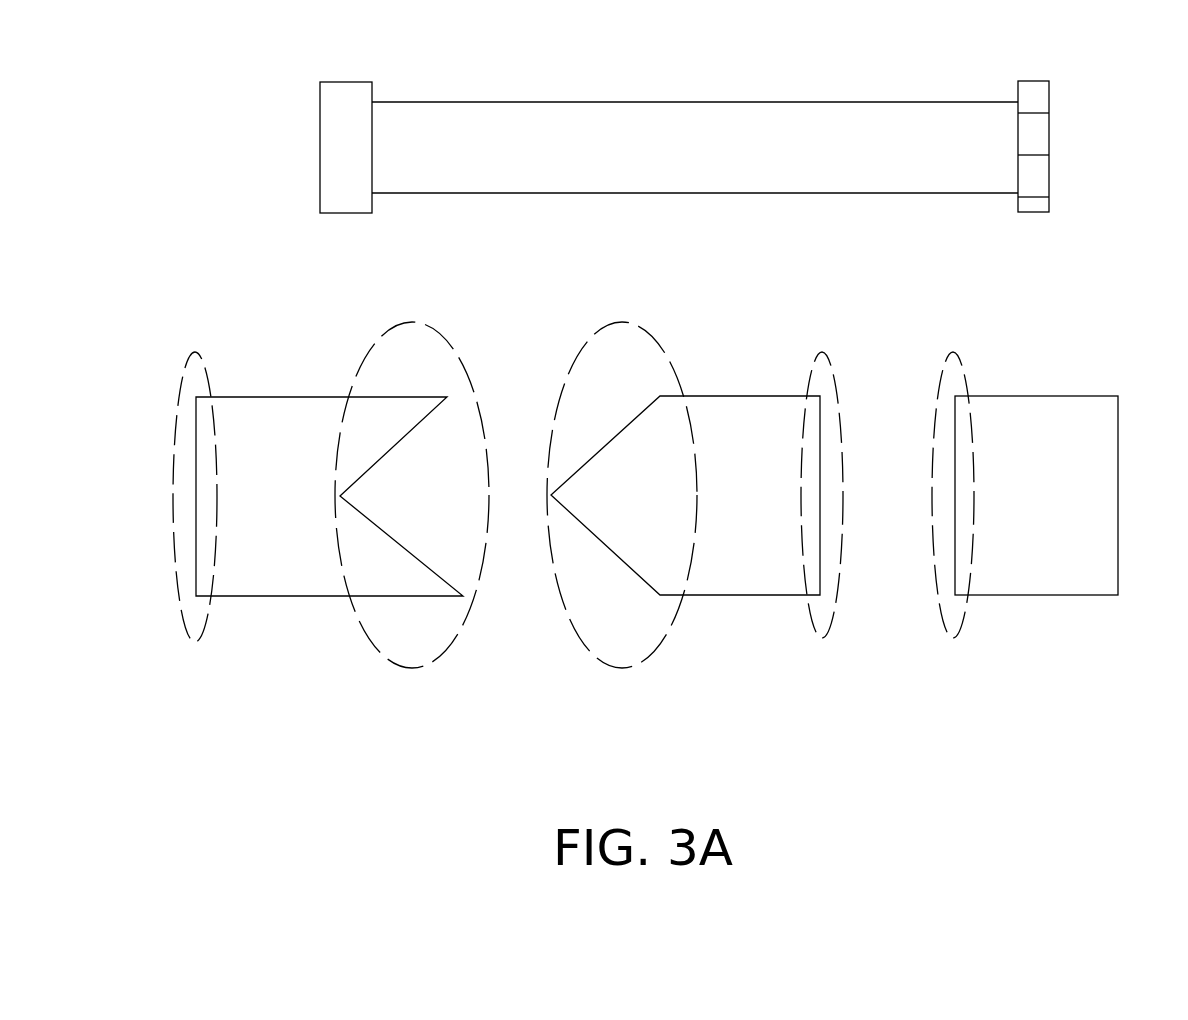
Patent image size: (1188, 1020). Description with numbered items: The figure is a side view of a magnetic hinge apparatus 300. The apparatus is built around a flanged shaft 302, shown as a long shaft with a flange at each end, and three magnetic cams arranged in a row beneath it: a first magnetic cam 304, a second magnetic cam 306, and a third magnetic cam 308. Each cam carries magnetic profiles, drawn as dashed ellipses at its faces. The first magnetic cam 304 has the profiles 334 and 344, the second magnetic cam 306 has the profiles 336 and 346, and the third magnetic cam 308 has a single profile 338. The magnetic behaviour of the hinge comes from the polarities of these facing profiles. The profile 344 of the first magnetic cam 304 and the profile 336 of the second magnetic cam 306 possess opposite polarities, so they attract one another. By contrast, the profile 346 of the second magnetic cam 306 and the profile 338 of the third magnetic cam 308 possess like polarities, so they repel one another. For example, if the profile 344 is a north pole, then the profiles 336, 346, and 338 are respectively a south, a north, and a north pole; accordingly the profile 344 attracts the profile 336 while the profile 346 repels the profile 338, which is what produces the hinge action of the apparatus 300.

The magnetic hinge apparatus 300 is at (1158, 692).
The flanged shaft 302 is at (684, 112).
The first magnetic cam 304 is at (324, 581).
The second magnetic cam 306 is at (685, 571).
The third magnetic cam 308 is at (1036, 571).
The profile 334 is at (226, 450).
The profile 336 is at (647, 463).
The profile 338 is at (984, 448).
The profile 344 is at (437, 464).
The profile 346 is at (854, 448).